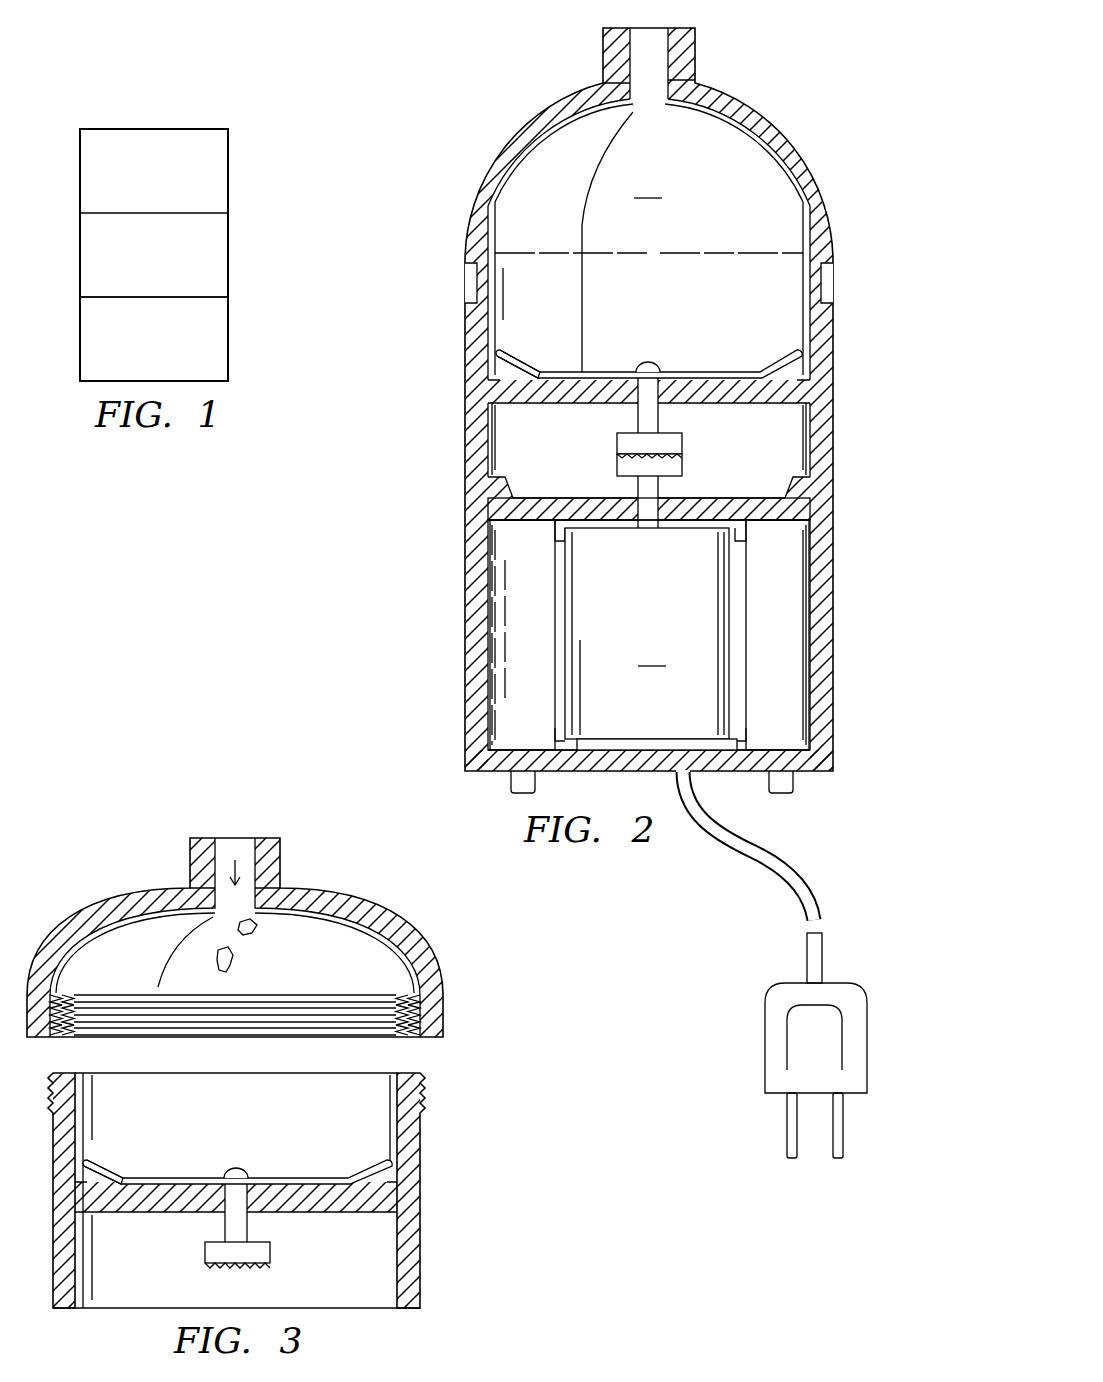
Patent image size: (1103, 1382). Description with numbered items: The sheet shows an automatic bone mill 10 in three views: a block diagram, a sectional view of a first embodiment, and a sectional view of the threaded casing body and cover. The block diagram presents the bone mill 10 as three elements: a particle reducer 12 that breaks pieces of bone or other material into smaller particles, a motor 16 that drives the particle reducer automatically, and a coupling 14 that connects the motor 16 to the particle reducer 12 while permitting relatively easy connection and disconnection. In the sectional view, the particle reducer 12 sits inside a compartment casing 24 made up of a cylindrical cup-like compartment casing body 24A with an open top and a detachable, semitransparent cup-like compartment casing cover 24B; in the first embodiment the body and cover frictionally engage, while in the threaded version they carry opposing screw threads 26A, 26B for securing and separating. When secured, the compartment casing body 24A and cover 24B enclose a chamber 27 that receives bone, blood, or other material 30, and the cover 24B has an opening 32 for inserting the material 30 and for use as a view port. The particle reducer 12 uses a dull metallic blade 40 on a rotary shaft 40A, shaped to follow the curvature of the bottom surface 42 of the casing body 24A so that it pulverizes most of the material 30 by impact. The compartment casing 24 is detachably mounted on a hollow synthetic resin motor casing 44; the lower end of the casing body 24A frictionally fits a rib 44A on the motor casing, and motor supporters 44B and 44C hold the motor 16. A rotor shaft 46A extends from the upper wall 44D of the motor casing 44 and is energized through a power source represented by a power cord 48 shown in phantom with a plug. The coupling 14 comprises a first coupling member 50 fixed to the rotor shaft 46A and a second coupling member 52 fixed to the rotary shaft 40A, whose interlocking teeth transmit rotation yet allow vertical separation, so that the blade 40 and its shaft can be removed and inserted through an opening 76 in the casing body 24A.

In FIG. 1, the automatic bone mill 10 is at (88, 100).
In FIG. 2, the automatic bone mill 10 is at (794, 63).
In FIG. 1, the particle reducer 12 is at (80, 168).
In FIG. 2, the particle reducer 12 is at (649, 326).
In FIG. 3, the particle reducer 12 is at (237, 1133).
In FIG. 1, the coupling 14 is at (80, 255).
In FIG. 2, the coupling 14 is at (660, 452).
In FIG. 1, the motor 16 is at (80, 340).
In FIG. 2, the motor 16 is at (651, 639).
In FIG. 2, the compartment casing 24 is at (840, 325).
In FIG. 2, the compartment casing body 24A is at (835, 391).
In FIG. 3, the compartment casing body 24A is at (420, 1225).
In FIG. 2, the compartment casing cover 24B is at (820, 203).
In FIG. 3, the compartment casing cover 24B is at (443, 970).
In FIG. 3, the screw threads 26A is at (425, 1093).
In FIG. 3, the screw threads 26B is at (100, 1010).
In FIG. 2, the chamber 27 is at (649, 241).
In FIG. 3, the material 30 is at (258, 925).
In FIG. 2, the opening 32 is at (604, 50).
In FIG. 3, the opening 32 is at (195, 868).
In FIG. 2, the blade 40 is at (748, 362).
In FIG. 3, the blade 40 is at (338, 1170).
In FIG. 2, the rotary shaft 40A is at (647, 365).
In FIG. 3, the rotary shaft 40A is at (236, 1172).
In FIG. 2, the bottom surface 42 is at (532, 360).
In FIG. 3, the bottom surface 42 is at (120, 1172).
In FIG. 2, the motor casing 44 is at (838, 660).
In FIG. 2, the rib 44A is at (500, 490).
In FIG. 2, the motor supporter 44B is at (752, 530).
In FIG. 2, the motor supporter 44C is at (745, 730).
In FIG. 2, the upper wall 44D is at (745, 500).
In FIG. 2, the rotor shaft 46A is at (650, 520).
In FIG. 2, the power cord 48 is at (798, 862).
In FIG. 2, the first coupling member 50 is at (617, 470).
In FIG. 2, the second coupling member 52 is at (617, 440).
In FIG. 3, the second coupling member 52 is at (205, 1250).
In FIG. 3, the opening 76 is at (252, 1214).